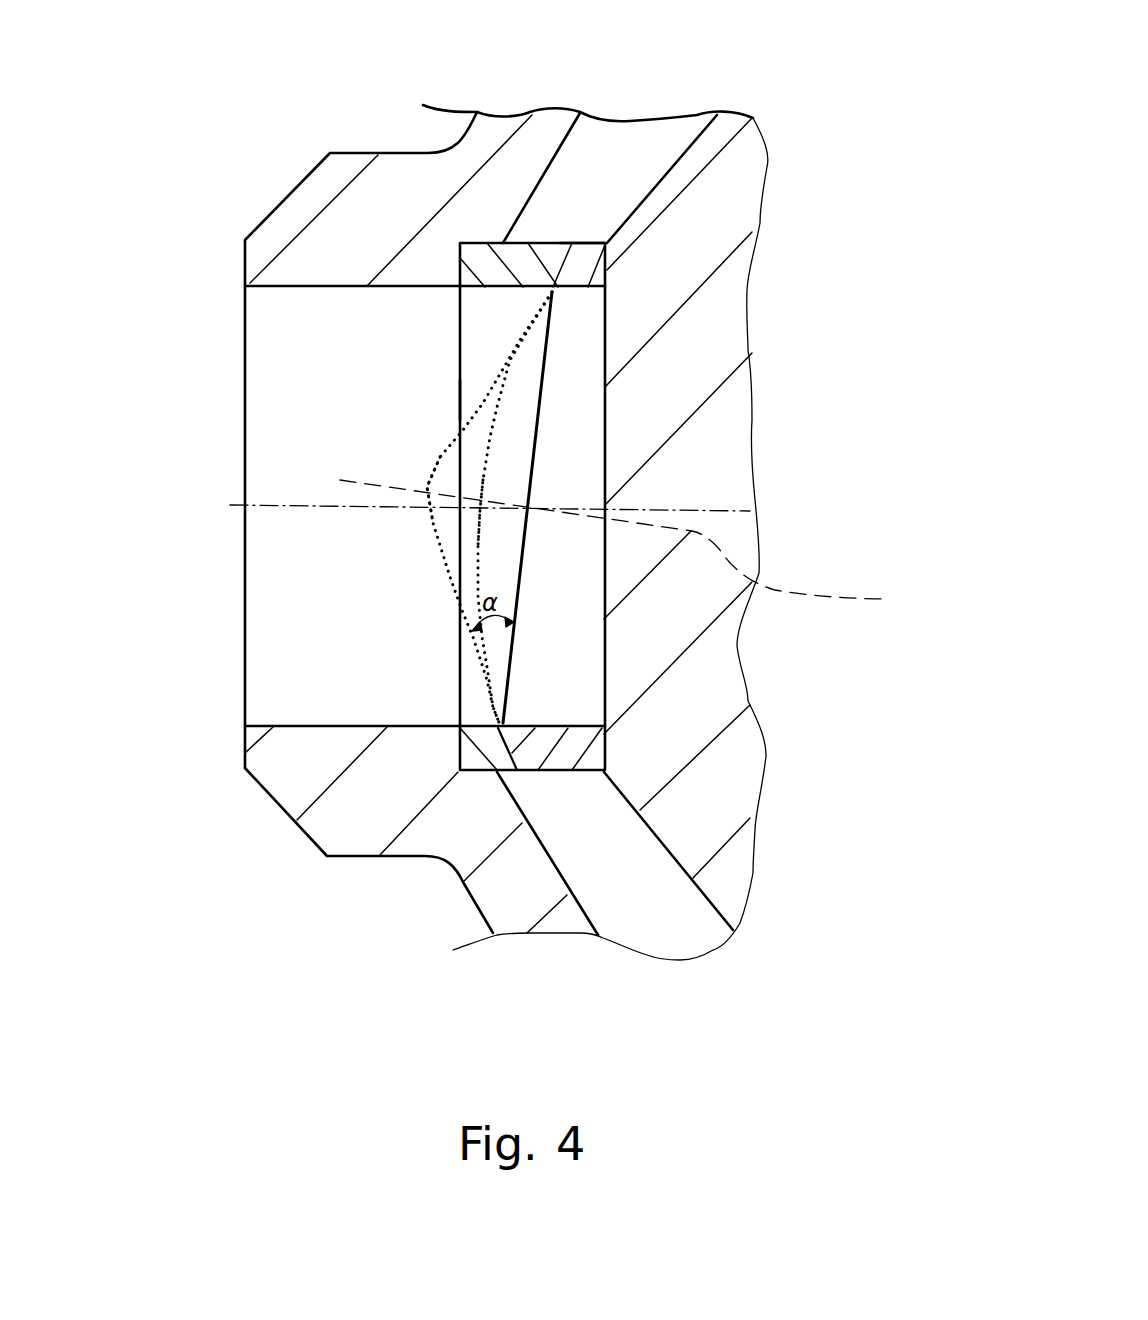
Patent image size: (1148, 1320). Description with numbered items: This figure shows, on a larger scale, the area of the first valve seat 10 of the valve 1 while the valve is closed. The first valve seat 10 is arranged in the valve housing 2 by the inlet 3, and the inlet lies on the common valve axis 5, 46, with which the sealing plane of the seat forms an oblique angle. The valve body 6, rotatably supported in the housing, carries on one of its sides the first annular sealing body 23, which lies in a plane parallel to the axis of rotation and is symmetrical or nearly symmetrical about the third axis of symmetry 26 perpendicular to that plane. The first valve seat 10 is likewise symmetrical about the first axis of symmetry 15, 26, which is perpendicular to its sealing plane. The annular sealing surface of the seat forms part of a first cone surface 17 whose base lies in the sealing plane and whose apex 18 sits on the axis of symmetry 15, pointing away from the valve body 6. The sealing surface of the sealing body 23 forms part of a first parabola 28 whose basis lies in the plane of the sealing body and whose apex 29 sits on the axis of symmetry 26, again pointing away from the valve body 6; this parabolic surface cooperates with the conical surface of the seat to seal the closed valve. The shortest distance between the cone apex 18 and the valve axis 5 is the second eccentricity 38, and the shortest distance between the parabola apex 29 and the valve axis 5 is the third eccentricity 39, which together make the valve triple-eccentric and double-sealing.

The valve 1 is at (287, 972).
The valve housing 2 is at (373, 193).
The inlet 3 is at (270, 324).
The valve axis 5 is at (450, 449).
The pin axis 46 is at (450, 449).
The valve body 6 is at (690, 728).
The first valve seat 10 is at (520, 263).
The first axis of symmetry 15 is at (655, 546).
The third axis of symmetry 26 is at (655, 546).
The first cone surface 17 is at (462, 400).
The apex 18 is at (417, 473).
The first annular sealing body 23 is at (583, 270).
The first parabola 28 is at (463, 403).
The apex 29 is at (483, 497).
The second eccentricity 38 is at (427, 492).
The third eccentricity 39 is at (477, 497).